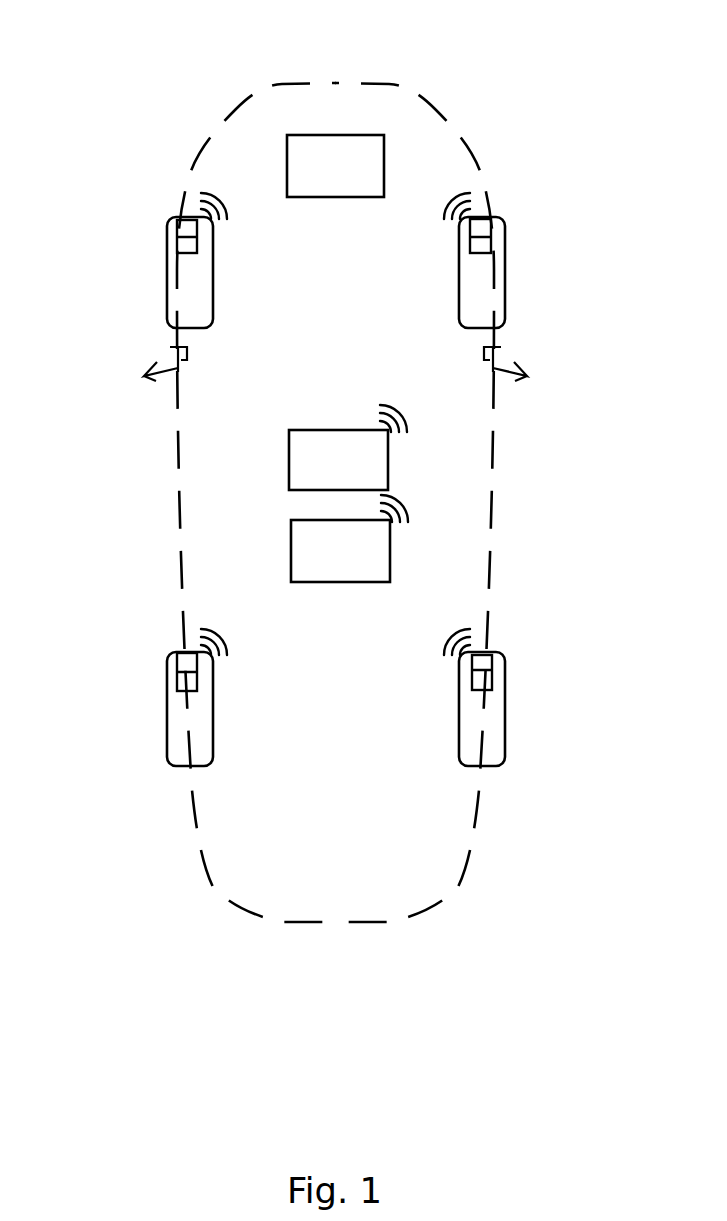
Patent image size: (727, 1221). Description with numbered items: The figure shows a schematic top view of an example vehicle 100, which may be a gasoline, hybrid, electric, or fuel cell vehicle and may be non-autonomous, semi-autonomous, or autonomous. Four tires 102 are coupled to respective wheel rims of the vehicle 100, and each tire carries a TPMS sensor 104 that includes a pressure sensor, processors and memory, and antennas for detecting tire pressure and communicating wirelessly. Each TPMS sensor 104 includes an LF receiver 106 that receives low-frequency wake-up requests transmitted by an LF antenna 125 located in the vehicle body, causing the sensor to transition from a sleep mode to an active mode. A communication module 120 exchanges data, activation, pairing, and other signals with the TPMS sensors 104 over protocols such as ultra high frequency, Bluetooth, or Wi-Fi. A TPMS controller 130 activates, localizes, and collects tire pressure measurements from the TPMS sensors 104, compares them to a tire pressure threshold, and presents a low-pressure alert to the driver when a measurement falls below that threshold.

The vehicle 100 is at (330, 84).
The tires 102 is at (166, 306).
The TPMS sensors 104 is at (172, 222).
The LF receiver 106 is at (172, 246).
The communication module 120 is at (348, 447).
The LF antenna 125 is at (349, 538).
The TPMS controller 130 is at (335, 166).